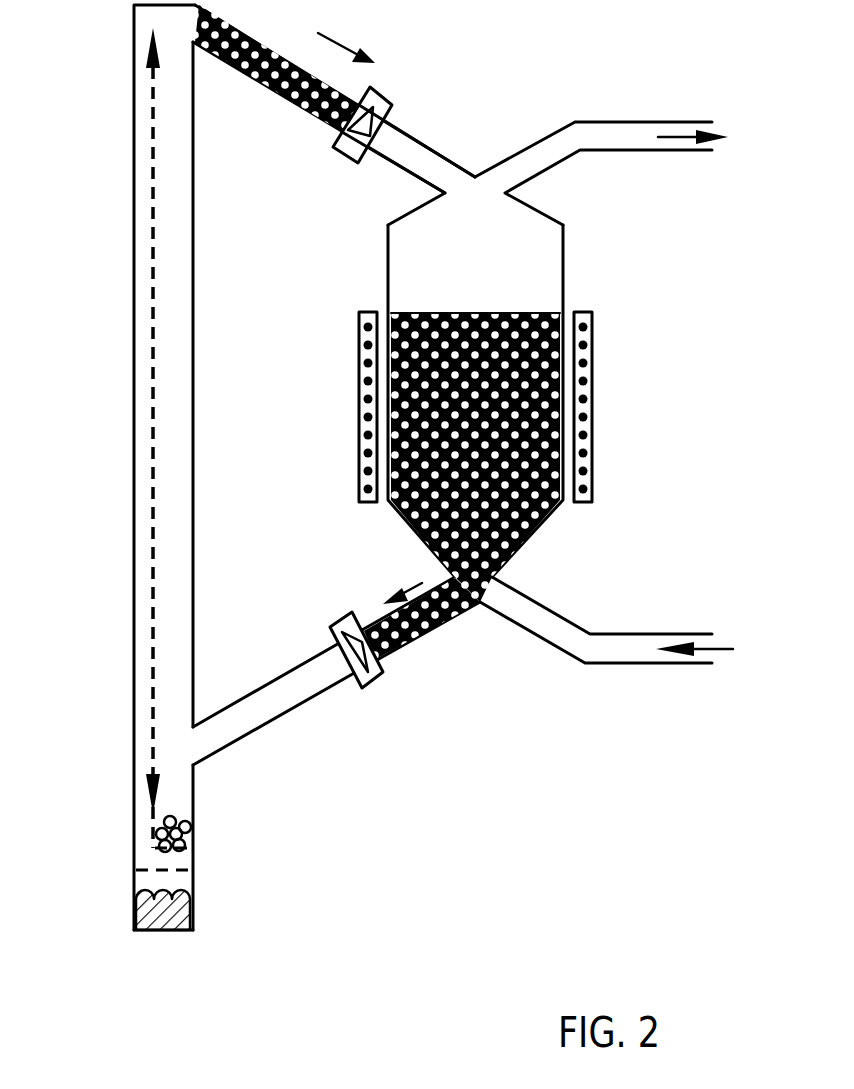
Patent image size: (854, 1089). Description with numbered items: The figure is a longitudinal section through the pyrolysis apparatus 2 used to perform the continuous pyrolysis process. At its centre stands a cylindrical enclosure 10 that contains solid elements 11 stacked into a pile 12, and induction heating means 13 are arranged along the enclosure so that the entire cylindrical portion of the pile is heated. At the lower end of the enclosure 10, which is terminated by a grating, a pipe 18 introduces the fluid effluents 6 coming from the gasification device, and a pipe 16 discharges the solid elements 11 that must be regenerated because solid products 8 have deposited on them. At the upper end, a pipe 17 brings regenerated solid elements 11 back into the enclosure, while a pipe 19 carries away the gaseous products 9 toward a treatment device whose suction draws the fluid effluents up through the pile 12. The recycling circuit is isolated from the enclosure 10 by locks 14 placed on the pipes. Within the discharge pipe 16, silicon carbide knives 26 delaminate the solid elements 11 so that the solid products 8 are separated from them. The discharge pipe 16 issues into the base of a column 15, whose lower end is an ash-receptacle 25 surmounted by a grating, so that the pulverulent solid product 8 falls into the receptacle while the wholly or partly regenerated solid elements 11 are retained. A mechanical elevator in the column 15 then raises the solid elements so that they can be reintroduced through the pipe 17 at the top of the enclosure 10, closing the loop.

The pyrolysis apparatus 2 is at (647, 473).
The fluid effluents 6 is at (707, 652).
The solid products 8 is at (133, 930).
The gaseous products 9 is at (708, 138).
The cylindrical enclosure 10 is at (563, 298).
The solid elements 11 is at (407, 313).
The pile 12 is at (470, 313).
The induction heating means 13 is at (358, 477).
The lock 14 is at (393, 105).
The column 15 is at (132, 472).
The discharge pipe 16 is at (415, 640).
The introduction pipe 17 is at (440, 150).
The effluent introduction pipe 18 is at (687, 663).
The gaseous product discharge pipe 19 is at (658, 150).
The ash-receptacle 25 is at (192, 878).
The silicon carbide knives 26 is at (273, 715).